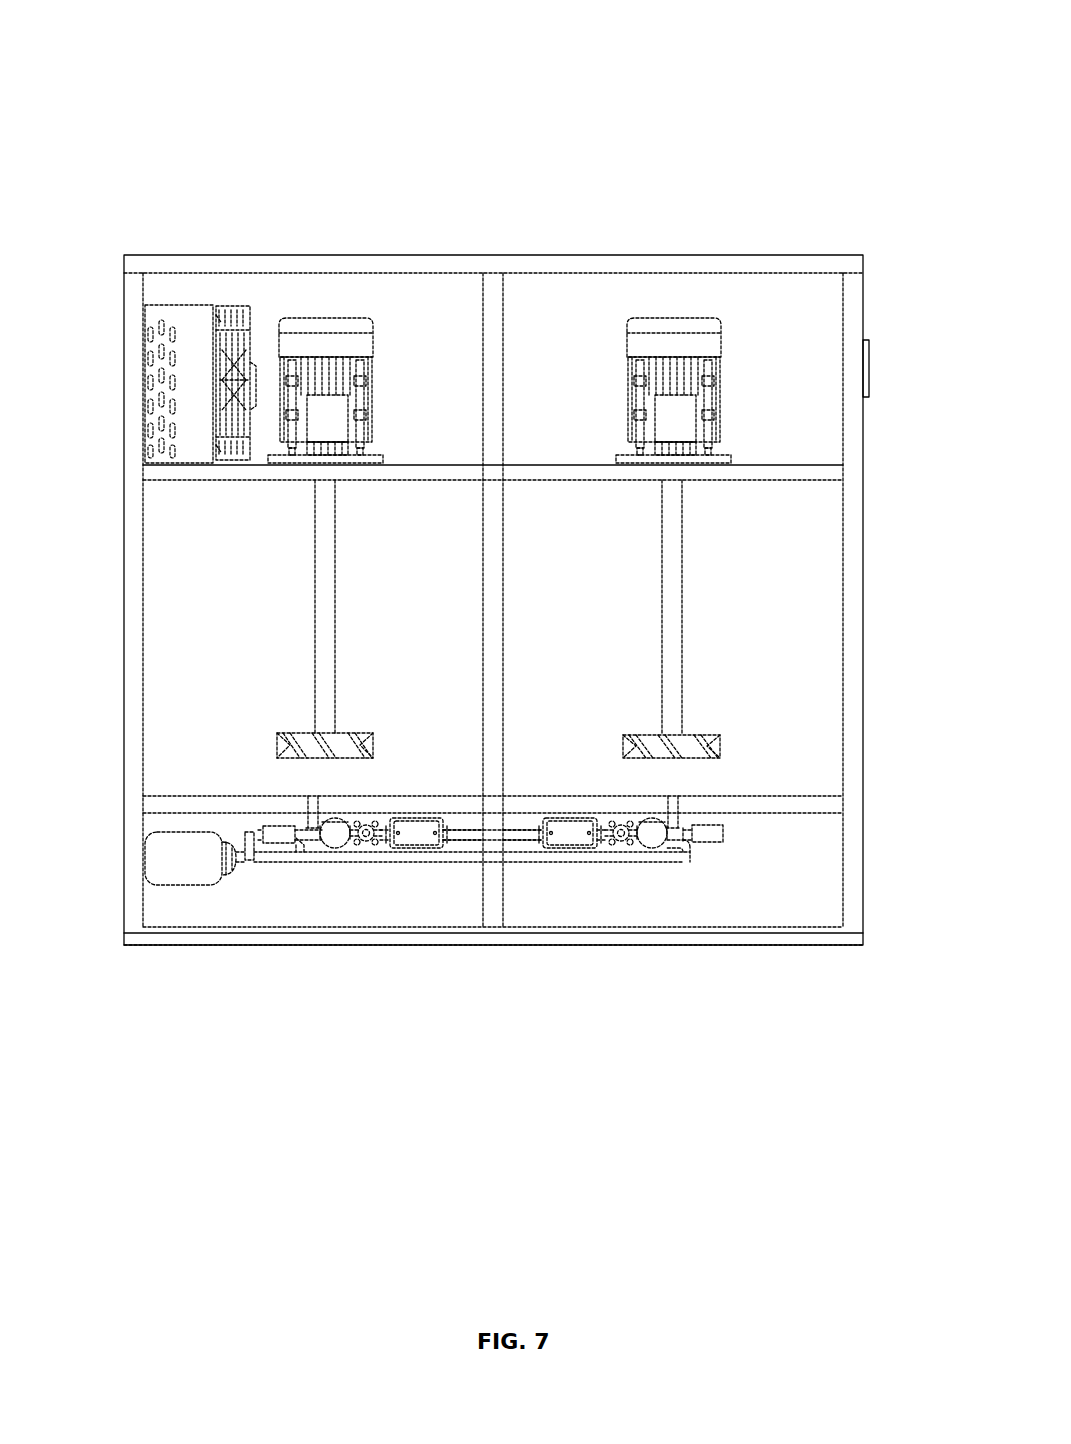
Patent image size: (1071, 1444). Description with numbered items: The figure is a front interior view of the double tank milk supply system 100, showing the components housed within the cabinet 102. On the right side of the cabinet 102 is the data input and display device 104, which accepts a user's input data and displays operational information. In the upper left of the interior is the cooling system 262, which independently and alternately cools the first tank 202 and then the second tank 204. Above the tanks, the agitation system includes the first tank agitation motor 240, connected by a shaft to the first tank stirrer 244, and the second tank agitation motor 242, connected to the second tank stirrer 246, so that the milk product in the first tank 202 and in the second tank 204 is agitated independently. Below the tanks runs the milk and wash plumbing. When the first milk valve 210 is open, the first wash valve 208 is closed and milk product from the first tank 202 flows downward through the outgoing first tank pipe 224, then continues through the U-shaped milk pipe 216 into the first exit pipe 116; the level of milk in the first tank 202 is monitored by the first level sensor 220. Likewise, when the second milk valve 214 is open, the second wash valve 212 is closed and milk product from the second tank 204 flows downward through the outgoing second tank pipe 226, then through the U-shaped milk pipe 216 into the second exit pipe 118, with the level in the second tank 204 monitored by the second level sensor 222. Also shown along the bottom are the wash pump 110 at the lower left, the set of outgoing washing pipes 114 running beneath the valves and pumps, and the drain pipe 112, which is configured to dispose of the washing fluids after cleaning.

The double tank milk supply system 100 is at (856, 60).
The cabinet 102 is at (86, 556).
The data input and display device 104 is at (870, 362).
The wash pump 110 is at (160, 854).
The drain pipe 112 is at (250, 838).
The set of outgoing washing pipes 114 is at (292, 845).
The first exit pipe 116 is at (366, 842).
The second exit pipe 118 is at (621, 842).
The first tank 202 is at (244, 581).
The second tank 204 is at (795, 581).
The first wash valve 208 is at (335, 844).
The first milk valve 210 is at (415, 842).
The second wash valve 212 is at (651, 843).
The second milk valve 214 is at (567, 842).
The U-shaped milk pipe 216 is at (467, 830).
The first level sensor 220 is at (268, 830).
The second level sensor 222 is at (722, 841).
The outgoing first tank pipe 224 is at (318, 827).
The outgoing second tank pipe 226 is at (668, 824).
The first tank agitation motor 240 is at (333, 328).
The second tank agitation motor 242 is at (669, 328).
The first tank stirrer 244 is at (360, 740).
The second tank stirrer 246 is at (706, 740).
The cooling system 262 is at (212, 285).